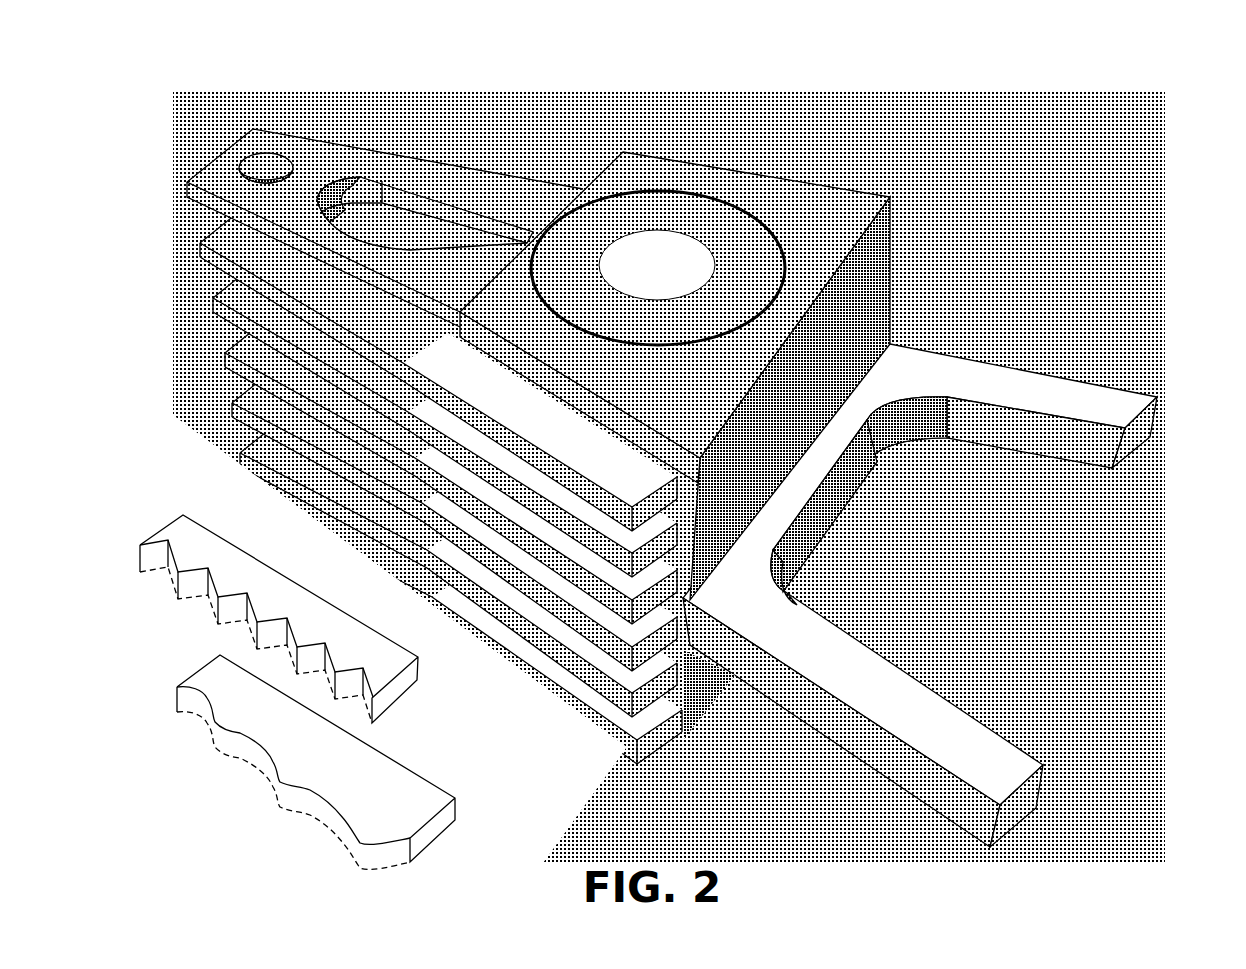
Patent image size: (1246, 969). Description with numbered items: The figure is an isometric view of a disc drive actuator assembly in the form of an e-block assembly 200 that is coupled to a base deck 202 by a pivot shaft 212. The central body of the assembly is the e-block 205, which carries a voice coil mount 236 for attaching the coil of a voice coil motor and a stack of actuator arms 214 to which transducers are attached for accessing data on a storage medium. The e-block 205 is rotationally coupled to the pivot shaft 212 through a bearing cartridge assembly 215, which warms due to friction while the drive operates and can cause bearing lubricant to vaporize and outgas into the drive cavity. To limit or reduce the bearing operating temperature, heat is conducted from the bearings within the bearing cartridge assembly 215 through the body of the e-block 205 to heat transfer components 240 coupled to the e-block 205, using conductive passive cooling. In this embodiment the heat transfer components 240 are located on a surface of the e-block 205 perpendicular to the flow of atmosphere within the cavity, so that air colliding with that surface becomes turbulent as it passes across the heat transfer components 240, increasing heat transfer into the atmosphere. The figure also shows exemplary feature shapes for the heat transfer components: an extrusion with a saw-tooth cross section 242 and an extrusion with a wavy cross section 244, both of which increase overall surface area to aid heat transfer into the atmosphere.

The e-block assembly 200 is at (1156, 69).
The base deck 202 is at (1028, 233).
The e-block 205 is at (823, 187).
The pivot shaft 212 is at (660, 270).
The bearing cartridge assembly 215 is at (737, 258).
The actuator arms 214 is at (436, 168).
The voice coil mount 236 is at (1060, 387).
The heat transfer components 240 is at (637, 747).
The extrusion with saw-tooth cross section 242 is at (262, 562).
The extrusion with wavy cross section 244 is at (417, 773).